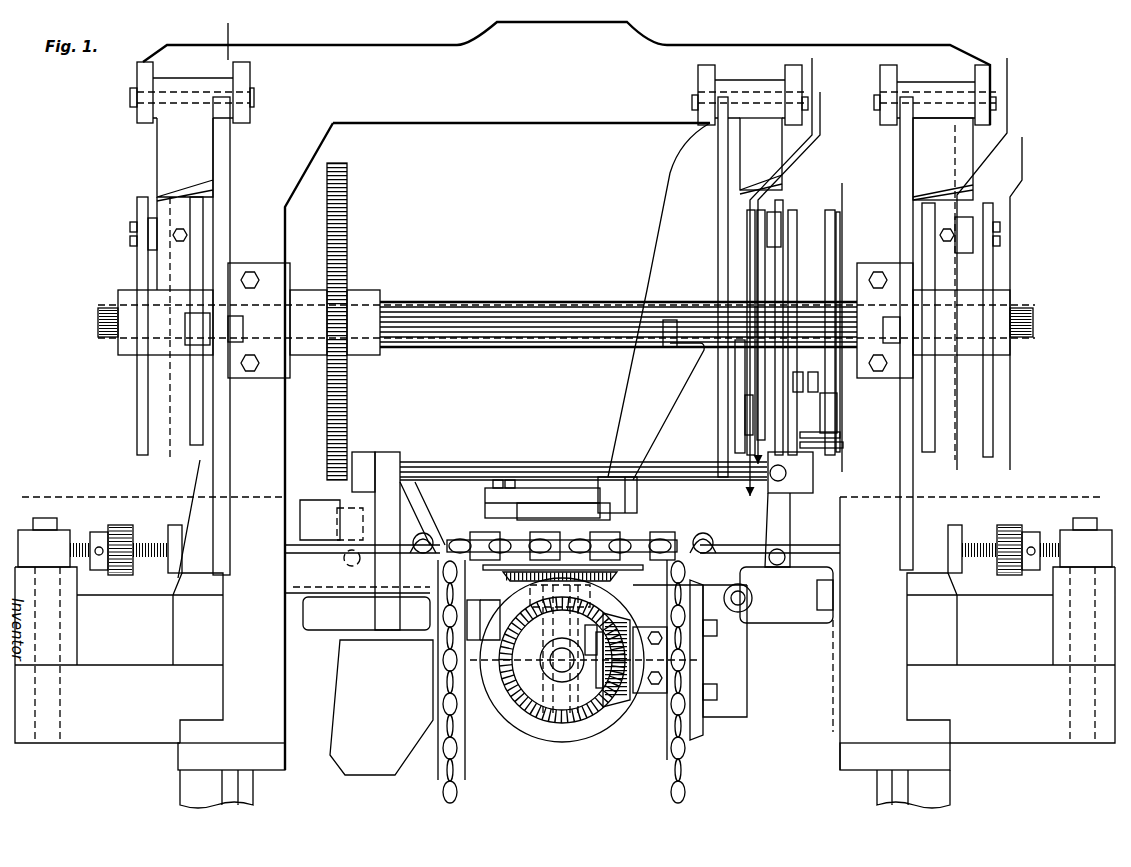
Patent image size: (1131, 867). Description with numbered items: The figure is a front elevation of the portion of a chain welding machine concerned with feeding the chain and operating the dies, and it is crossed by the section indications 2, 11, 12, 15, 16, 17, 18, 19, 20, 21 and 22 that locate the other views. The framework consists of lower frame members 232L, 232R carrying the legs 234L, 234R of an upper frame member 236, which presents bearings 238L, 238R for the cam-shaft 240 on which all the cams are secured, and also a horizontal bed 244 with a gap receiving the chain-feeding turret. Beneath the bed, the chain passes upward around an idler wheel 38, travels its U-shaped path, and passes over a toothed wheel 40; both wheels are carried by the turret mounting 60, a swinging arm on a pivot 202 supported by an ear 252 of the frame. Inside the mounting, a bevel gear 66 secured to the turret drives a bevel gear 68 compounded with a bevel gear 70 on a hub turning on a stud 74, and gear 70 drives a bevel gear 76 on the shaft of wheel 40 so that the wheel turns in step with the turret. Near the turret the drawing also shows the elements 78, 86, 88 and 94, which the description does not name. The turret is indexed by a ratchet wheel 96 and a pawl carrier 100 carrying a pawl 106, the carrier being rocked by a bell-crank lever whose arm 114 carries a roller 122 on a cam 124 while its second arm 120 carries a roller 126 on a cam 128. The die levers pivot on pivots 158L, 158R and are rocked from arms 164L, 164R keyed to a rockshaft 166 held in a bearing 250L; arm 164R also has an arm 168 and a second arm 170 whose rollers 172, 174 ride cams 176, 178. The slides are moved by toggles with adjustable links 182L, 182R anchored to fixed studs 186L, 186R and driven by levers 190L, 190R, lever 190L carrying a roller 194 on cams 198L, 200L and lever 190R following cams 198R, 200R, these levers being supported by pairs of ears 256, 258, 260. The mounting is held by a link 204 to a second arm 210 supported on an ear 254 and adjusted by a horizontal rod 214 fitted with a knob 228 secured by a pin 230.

The section line 2- 2 is at (22, 510).
The section line 11- 11 is at (832, 527).
The section line 12- 12 is at (293, 598).
The section line 15- 15 is at (818, 92).
The section line 16- 16 is at (800, 58).
The section line 17- 17 is at (837, 183).
The section line 18- 18 is at (824, 330).
The section line 19- 19 is at (1017, 137).
The section line 20- 20 is at (1003, 58).
The section line 21- 21 is at (230, 38).
The section line 22- 22 is at (220, 23).
The idler wheel 38 is at (438, 658).
The toothed wheel 40 is at (690, 740).
The turret mounting 60 is at (482, 720).
The bevel gear 66 is at (617, 573).
The bevel gear 68 is at (525, 738).
The bevel gear 70 is at (555, 745).
The stud 74 is at (545, 663).
The bevel gear 76 is at (617, 728).
The sprocket 78 is at (482, 540).
The sprocket 86 is at (660, 530).
The sprocket 88 is at (641, 538).
The plate 94 is at (500, 572).
The ratchet wheel 96 is at (578, 505).
The pawl carrier 100 is at (527, 497).
The pawl 106 is at (150, 235).
The arm 114 is at (660, 240).
The second arm 120 is at (777, 167).
The roller 122 is at (730, 354).
The cam 124 is at (740, 391).
The roller 126 is at (787, 235).
The cam 128 is at (742, 413).
The pivot 158L is at (425, 533).
The pivot 158R is at (705, 533).
The arm 164L is at (365, 450).
The arm 164R is at (820, 490).
The rockshaft 166 is at (562, 463).
The arm 168 is at (840, 437).
The second arm 170 is at (843, 448).
The roller 172 is at (790, 398).
The roller 174 is at (838, 406).
The cam 176 is at (798, 222).
The cam 178 is at (838, 222).
The adjustable link 182L is at (100, 556).
The adjustable link 182R is at (1030, 558).
The fixed stud 186L is at (60, 632).
The fixed stud 186R is at (1068, 632).
The lever 190L is at (218, 152).
The lever 190R is at (898, 153).
The roller 194 is at (188, 345).
The cam 198L is at (198, 408).
The cam 198R is at (986, 388).
The cam 200L is at (142, 270).
The cam 200R is at (998, 270).
The pivot 202 is at (328, 780).
The link 204 is at (618, 620).
The second arm 210 is at (806, 623).
The horizontal rod 214 is at (775, 623).
The knob 228 is at (752, 598).
The pin 230 is at (645, 555).
The lower frame member 232L is at (182, 789).
The lower frame member 232R is at (940, 789).
The leg 234L is at (232, 692).
The leg 234R is at (1011, 655).
The upper frame member 236 is at (548, 117).
The bearing 238L is at (288, 292).
The bearing 238R is at (858, 276).
The cam-shaft 240 is at (525, 313).
The horizontal bed 244 is at (148, 727).
The bearing 250L is at (390, 455).
The ear 252 is at (368, 686).
The ear 254 is at (833, 590).
The pair of ears 256 is at (230, 67).
The pair of ears 258 is at (785, 72).
The pair of ears 260 is at (975, 72).